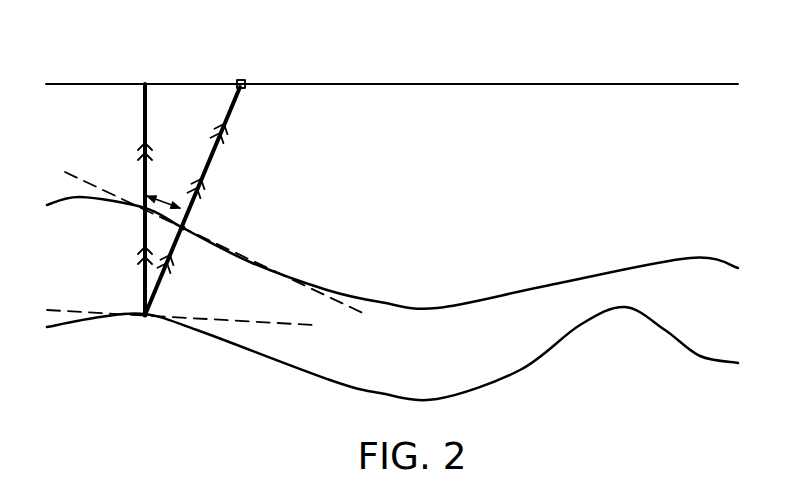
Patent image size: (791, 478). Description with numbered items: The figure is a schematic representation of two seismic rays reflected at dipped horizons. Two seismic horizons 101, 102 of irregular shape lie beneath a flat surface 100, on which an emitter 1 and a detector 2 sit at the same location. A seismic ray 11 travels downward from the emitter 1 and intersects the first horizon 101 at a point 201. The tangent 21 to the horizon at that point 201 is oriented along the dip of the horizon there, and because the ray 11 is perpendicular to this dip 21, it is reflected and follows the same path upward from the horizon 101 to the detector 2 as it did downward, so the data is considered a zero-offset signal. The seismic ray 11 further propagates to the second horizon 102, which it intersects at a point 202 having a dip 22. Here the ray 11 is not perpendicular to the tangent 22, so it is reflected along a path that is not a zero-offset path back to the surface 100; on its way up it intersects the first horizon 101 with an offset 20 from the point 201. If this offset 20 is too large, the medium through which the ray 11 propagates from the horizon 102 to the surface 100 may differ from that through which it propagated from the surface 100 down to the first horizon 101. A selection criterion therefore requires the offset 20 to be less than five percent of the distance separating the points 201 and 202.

The emitter 1 is at (244, 80).
The detector 2 is at (244, 80).
The seismic ray 11 is at (143, 113).
The offset 20 is at (165, 203).
The tangent (dip) to first horizon 21 is at (84, 178).
The tangent (dip) to second horizon 22 is at (77, 311).
The surface 100 is at (690, 83).
The first seismic horizon 101 is at (688, 258).
The second seismic horizon 102 is at (700, 356).
The first intersection point 201 is at (185, 229).
The second intersection point 202 is at (145, 320).